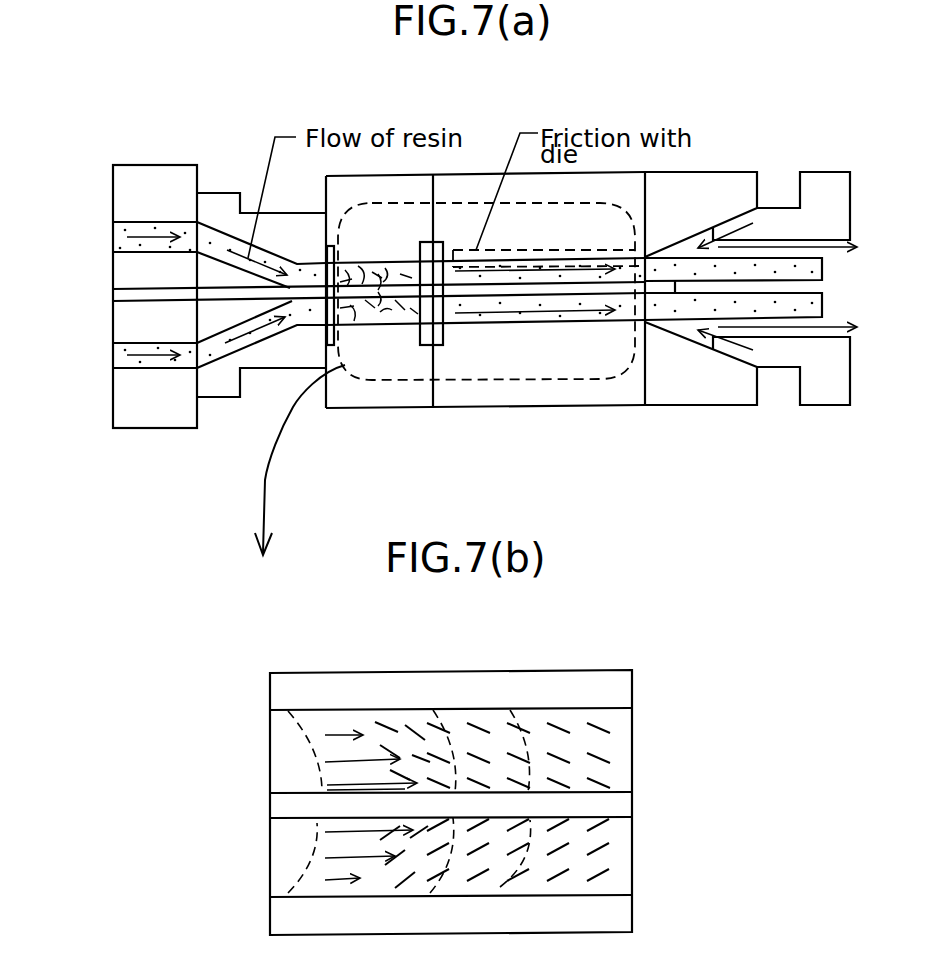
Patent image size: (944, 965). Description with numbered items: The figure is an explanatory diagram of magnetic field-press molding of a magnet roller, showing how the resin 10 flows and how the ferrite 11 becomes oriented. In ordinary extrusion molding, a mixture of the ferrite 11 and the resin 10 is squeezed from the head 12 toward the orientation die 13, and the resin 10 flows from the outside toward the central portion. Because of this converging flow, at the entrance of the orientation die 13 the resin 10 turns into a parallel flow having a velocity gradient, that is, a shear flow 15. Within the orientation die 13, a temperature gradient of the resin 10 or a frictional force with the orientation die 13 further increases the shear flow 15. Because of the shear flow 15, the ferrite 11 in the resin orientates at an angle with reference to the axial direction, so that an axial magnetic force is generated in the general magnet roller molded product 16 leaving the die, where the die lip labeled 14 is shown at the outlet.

In FIG. 7A, the resin 10 is at (113, 357).
In FIG. 7B, the resin 10 is at (282, 763).
In FIG. 7B, the ferrite 11 is at (518, 727).
In FIG. 7A, the head 12 is at (207, 397).
In FIG. 7A, the orientation die 13 is at (498, 381).
In FIG. 7B, the orientation die 13 is at (350, 875).
In FIG. 7A, the die lip 14 is at (717, 252).
In FIG. 7A, the shear flow 15 is at (388, 323).
In FIG. 7B, the shear flow 15 is at (353, 783).
In FIG. 7A, the magnet roller molded product 16 is at (822, 303).